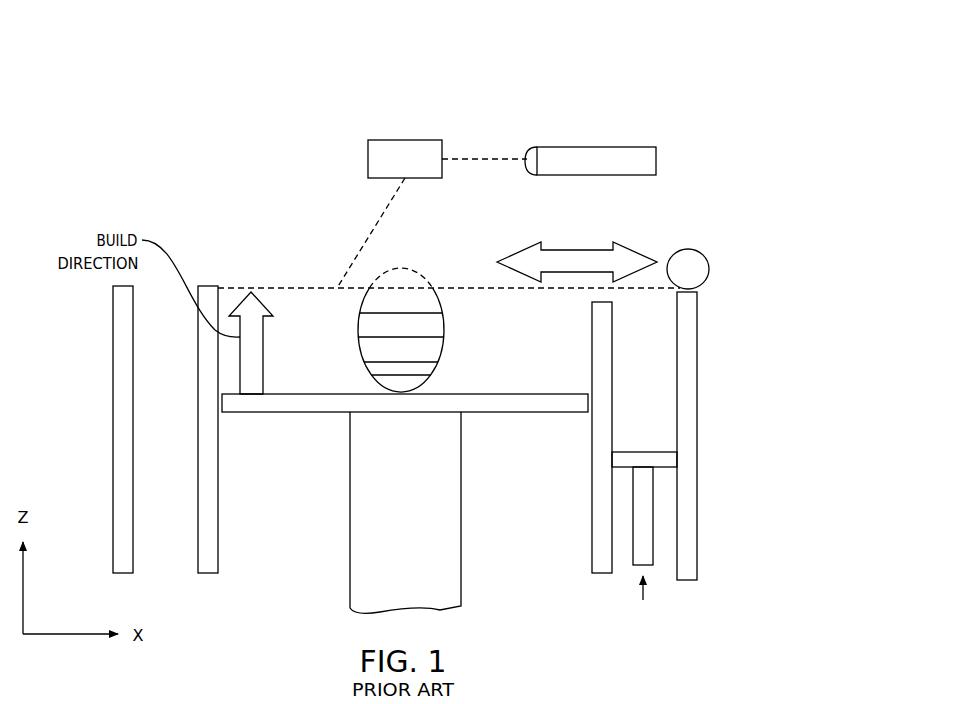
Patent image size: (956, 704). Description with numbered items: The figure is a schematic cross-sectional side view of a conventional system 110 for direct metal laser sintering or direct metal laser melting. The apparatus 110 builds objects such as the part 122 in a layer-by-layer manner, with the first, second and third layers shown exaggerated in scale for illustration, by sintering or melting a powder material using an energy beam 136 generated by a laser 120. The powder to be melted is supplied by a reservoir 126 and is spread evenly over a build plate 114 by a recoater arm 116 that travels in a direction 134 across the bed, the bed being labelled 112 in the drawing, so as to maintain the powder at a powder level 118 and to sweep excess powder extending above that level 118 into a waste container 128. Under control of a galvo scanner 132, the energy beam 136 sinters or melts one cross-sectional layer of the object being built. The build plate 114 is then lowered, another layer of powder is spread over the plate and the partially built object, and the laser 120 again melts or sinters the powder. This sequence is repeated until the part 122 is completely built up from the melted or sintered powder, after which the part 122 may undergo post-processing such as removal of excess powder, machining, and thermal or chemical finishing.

The conventional system 110 is at (226, 128).
The powder bed 112 is at (490, 308).
The build plate 114 is at (538, 395).
The recoater arm 116 is at (688, 250).
The powder level 118 is at (262, 286).
The laser 120 is at (583, 147).
The part 122 is at (358, 340).
The reservoir 126 is at (662, 348).
The waste container 128 is at (183, 508).
The galvo scanner 132 is at (410, 140).
The direction 134 is at (522, 250).
The energy beam 136 is at (380, 218).